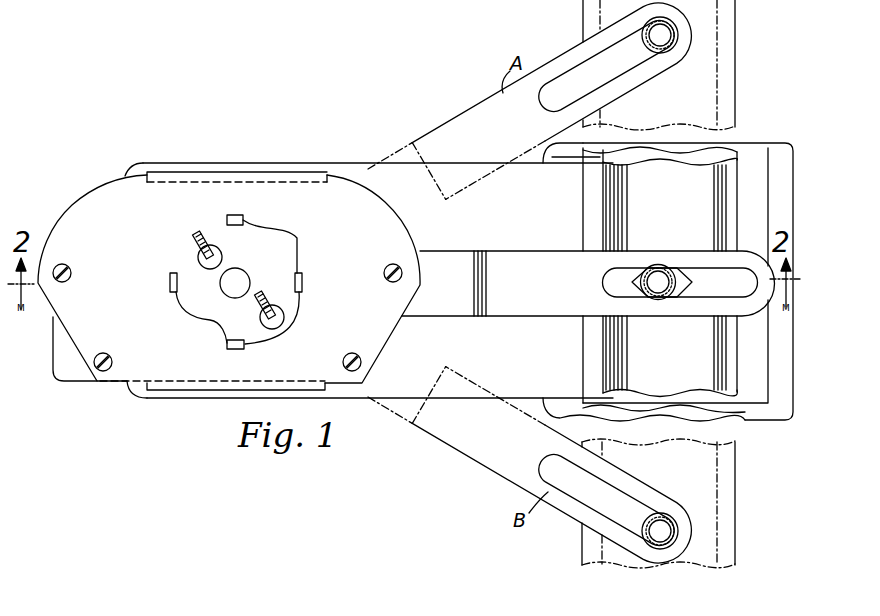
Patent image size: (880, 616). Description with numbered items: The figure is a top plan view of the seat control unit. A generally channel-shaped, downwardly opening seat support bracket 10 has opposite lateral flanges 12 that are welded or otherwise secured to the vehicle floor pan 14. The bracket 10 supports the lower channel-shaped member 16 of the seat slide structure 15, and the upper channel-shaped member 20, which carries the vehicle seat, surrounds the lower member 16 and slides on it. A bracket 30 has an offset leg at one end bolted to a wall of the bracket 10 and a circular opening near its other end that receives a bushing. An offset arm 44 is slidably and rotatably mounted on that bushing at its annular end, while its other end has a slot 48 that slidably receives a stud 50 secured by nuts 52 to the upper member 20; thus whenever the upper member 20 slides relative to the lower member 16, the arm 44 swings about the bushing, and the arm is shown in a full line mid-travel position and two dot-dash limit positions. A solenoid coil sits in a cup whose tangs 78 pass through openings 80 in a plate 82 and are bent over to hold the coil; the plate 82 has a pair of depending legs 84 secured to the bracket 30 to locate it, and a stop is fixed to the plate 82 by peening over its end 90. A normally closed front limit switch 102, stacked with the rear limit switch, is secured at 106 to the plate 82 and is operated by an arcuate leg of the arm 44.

The seat support bracket 10 is at (678, 404).
The lateral extending flanges 12 is at (745, 397).
The vehicle floor pan 14 is at (780, 414).
The seat slide structure 15 is at (581, 335).
The lower channel-shaped member 16 is at (660, 373).
The upper channel-shaped member 20 is at (705, 118).
The bracket 30 is at (467, 390).
The offset arm 44 is at (421, 137).
The slot 48 is at (565, 82).
The stud 50 is at (661, 44).
The nuts 52 is at (633, 289).
The tangs 78 is at (195, 327).
The openings 80 is at (297, 334).
The plate 82 is at (173, 195).
The depending legs 84 is at (227, 193).
The end of the stop 90 is at (248, 272).
The front limit switch 102 is at (68, 368).
The securing point of the limit switches 106 is at (70, 278).